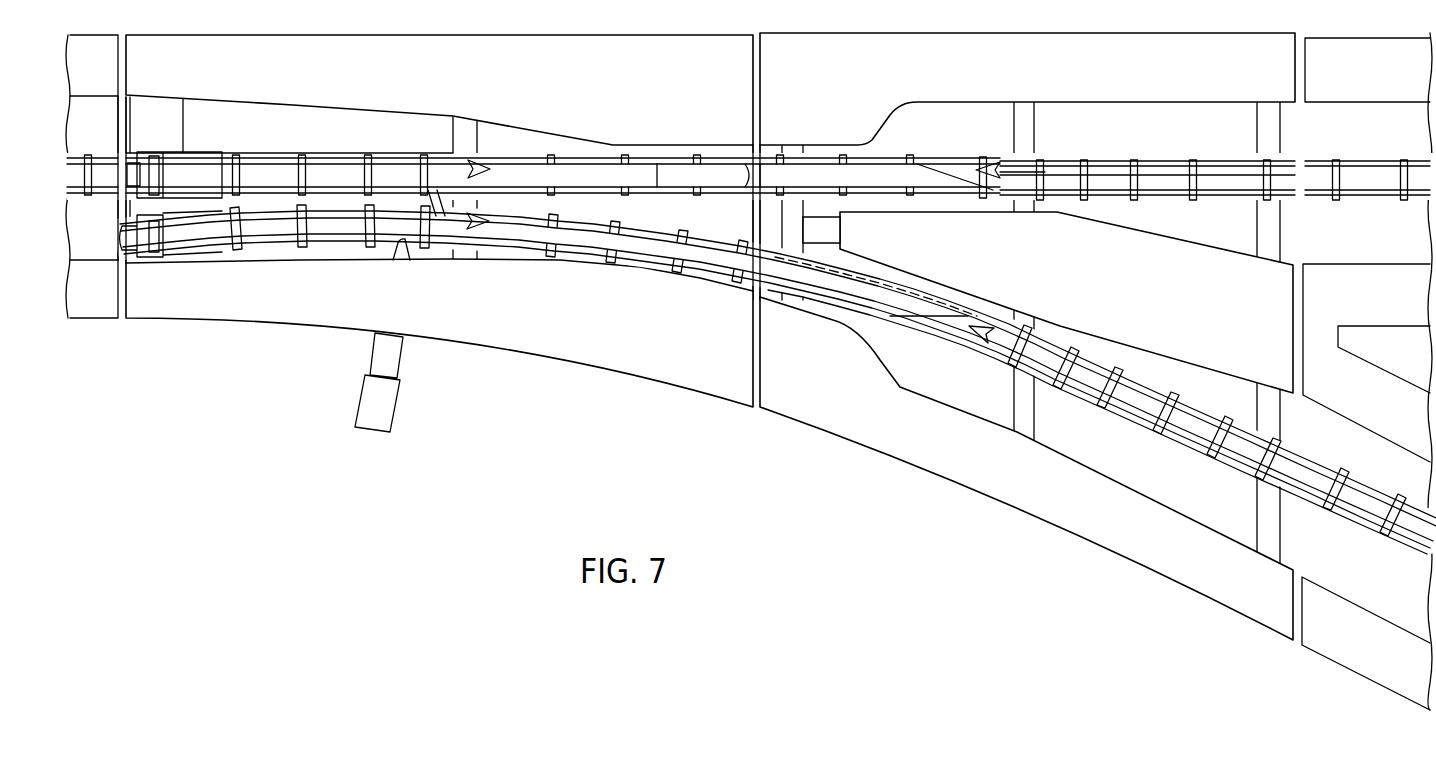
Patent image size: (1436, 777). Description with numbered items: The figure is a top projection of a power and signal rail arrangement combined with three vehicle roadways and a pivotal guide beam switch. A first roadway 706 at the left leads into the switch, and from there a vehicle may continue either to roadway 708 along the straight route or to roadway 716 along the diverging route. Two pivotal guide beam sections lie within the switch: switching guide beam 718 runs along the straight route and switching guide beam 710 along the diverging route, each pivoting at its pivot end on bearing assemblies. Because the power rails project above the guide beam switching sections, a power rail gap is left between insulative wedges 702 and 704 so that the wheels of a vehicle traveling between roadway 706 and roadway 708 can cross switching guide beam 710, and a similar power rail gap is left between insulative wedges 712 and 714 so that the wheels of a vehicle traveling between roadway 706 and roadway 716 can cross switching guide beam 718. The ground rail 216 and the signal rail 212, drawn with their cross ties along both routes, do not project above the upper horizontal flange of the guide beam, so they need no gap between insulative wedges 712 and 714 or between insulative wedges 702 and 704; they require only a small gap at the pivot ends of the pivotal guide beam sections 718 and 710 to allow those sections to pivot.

The signal rail 212 is at (290, 192).
The ground rail 216 is at (349, 162).
The insulative wedge 702 is at (977, 333).
The insulative wedge 704 is at (500, 262).
The roadway 706 is at (120, 219).
The roadway 708 is at (1414, 148).
The switching guide beam 710 is at (597, 262).
The insulative wedge 712 is at (997, 180).
The insulative wedge 714 is at (478, 166).
The roadway 716 is at (1402, 595).
The switching guide beam 718 is at (589, 171).